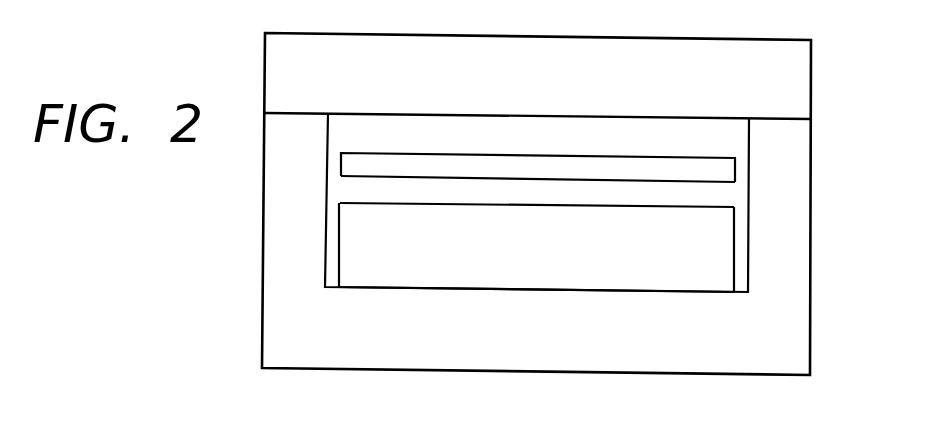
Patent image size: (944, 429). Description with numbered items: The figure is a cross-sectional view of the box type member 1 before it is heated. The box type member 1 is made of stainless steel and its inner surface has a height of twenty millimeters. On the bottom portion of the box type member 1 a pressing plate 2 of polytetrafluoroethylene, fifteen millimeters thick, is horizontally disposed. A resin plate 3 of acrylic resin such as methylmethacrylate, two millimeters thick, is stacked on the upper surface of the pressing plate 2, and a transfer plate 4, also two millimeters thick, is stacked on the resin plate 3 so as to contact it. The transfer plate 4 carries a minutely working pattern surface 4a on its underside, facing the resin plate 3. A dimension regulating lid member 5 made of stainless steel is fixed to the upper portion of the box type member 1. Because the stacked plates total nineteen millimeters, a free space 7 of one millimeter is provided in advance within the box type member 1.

The box type member 1 is at (785, 342).
The pressing plate 2 is at (725, 273).
The resin plate 3 is at (655, 200).
The transfer plate 4 is at (733, 172).
The minutely working pattern surface 4a is at (702, 183).
The dimension regulating lid member 5 is at (802, 66).
The free space 7 is at (738, 145).